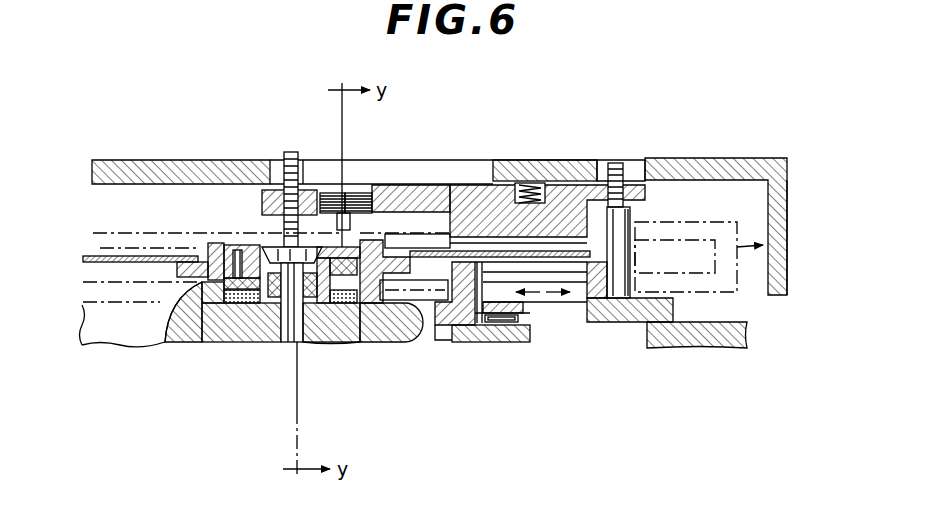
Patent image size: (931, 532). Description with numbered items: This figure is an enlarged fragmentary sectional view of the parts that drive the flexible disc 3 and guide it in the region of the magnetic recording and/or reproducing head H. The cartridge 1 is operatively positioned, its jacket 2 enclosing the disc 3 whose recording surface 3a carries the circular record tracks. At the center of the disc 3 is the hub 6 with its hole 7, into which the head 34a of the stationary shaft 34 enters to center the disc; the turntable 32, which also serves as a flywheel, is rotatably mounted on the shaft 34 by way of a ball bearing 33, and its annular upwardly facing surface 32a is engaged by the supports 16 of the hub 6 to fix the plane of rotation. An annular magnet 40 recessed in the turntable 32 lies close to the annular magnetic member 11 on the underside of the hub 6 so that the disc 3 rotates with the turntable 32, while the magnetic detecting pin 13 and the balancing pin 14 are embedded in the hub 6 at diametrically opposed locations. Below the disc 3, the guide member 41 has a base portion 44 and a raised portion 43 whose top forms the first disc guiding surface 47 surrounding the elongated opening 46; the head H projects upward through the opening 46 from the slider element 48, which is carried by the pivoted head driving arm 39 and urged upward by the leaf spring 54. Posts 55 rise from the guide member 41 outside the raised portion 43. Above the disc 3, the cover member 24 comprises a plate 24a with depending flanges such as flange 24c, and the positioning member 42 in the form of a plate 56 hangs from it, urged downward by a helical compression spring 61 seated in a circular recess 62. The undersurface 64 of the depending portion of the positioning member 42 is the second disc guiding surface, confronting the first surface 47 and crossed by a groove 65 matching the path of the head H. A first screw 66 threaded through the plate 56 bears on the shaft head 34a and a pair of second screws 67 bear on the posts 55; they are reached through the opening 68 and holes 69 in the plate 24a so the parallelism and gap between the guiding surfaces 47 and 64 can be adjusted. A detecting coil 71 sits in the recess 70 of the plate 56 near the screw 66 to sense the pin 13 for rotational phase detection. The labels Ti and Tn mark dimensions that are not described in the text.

The cartridge 1 is at (787, 240).
The jacket 2 is at (737, 292).
The flexible disc 3 is at (95, 258).
The recording surface 3a is at (524, 259).
The hub 6 is at (195, 258).
The hole 7 is at (258, 256).
The annular magnetic member 11 is at (212, 328).
The magnetic detecting pin 13 is at (215, 246).
The non-magnetic balancing pin 14 is at (345, 315).
The supports 16 is at (393, 322).
The cover member 24 is at (172, 158).
The plate 24a is at (153, 138).
The flange 24c is at (843, 203).
The turntable 32 is at (183, 330).
The annular upwardly facing surface 32a is at (178, 303).
The ball bearing 33 is at (284, 305).
The stationary shaft 34 is at (311, 297).
The head 34a is at (331, 300).
The head driving arm 39 is at (452, 340).
The annular magnet 40 is at (236, 298).
The guide member 41 is at (674, 311).
The positioning member 42 is at (466, 175).
The raised portion 43 is at (598, 300).
The base portion 44 is at (747, 340).
The opening 46 is at (573, 262).
The first disc guiding surface 47 is at (587, 252).
The slider element 48 is at (512, 303).
The leaf spring 54 is at (505, 322).
The posts 55 is at (618, 262).
The plate 56 is at (435, 197).
The helical compression spring 61 is at (532, 190).
The circular recess 62 is at (522, 188).
The undersurface 64 is at (572, 250).
The groove 65 is at (500, 240).
The first screw 66 is at (289, 152).
The second screws 67 is at (620, 163).
The opening 68 is at (410, 170).
The holes 69 is at (604, 165).
The recess 70 is at (360, 194).
The detecting coil 71 is at (327, 196).
The magnetic recording and/or reproducing head H is at (488, 323).
The thickness Ti is at (462, 323).
The thickness Tn is at (564, 262).